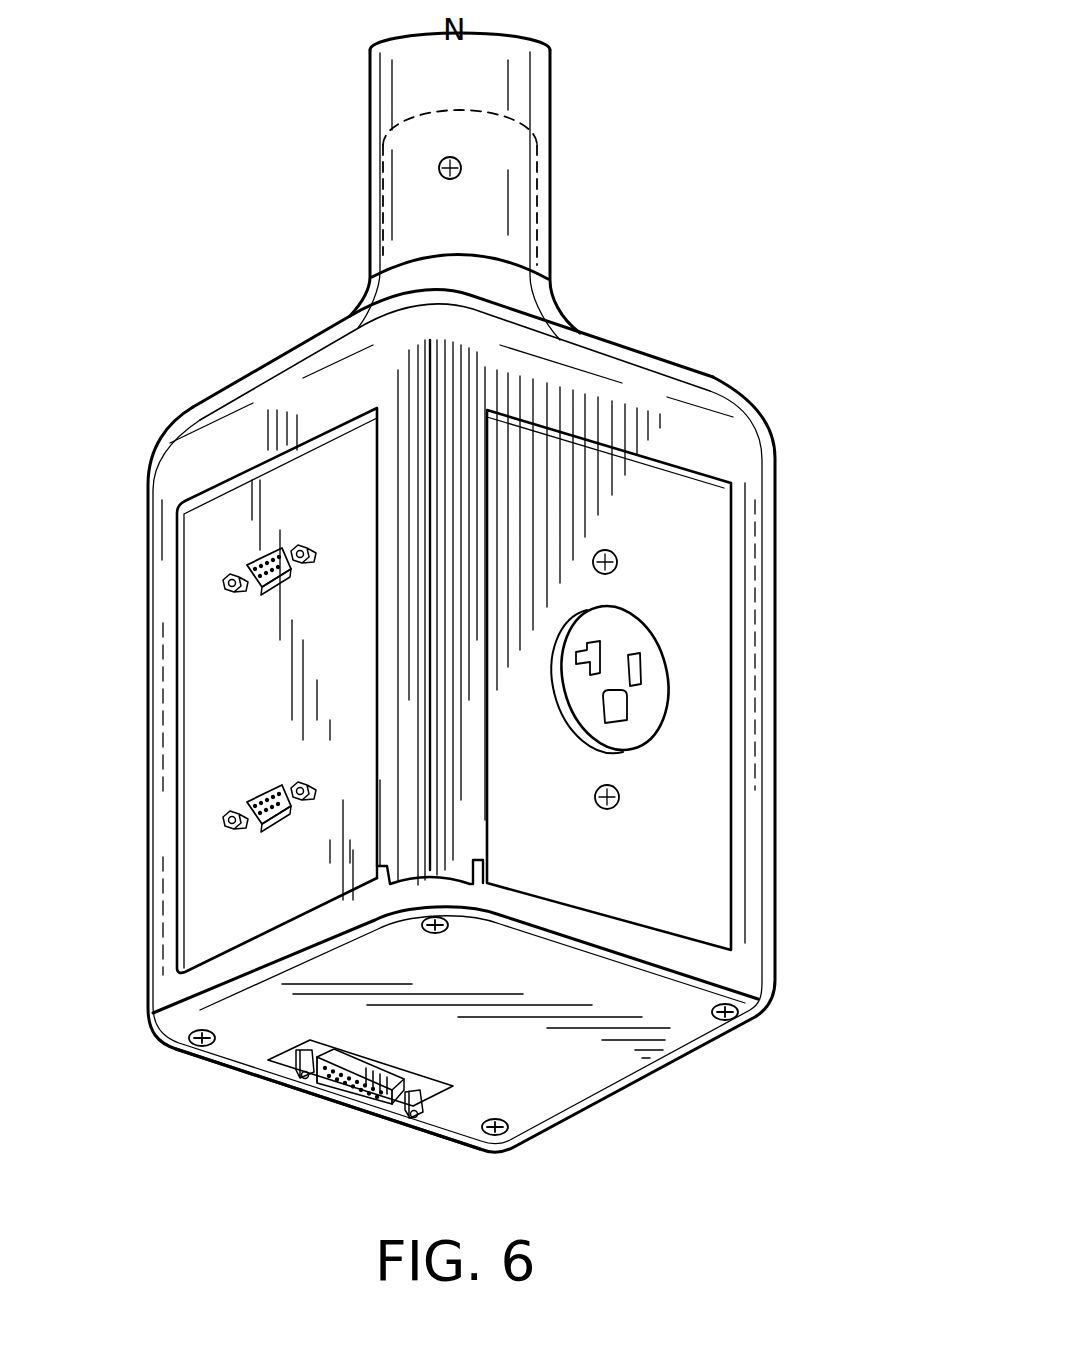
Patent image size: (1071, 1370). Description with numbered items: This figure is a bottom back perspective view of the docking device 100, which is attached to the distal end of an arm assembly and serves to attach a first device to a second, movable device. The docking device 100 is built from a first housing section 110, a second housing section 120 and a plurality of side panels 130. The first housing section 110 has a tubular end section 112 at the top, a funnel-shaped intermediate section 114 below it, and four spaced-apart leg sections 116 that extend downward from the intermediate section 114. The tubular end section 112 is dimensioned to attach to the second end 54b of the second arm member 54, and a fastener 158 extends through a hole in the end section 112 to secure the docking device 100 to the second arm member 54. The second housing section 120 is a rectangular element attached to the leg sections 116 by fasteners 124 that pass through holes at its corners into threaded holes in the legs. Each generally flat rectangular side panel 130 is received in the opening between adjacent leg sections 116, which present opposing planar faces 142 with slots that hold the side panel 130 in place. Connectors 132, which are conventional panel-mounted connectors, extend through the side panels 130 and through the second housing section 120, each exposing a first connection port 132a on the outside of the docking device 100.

The second arm member 54 is at (556, 86).
The second end 54b is at (370, 115).
The fastener 158 is at (439, 172).
The tubular end section 112 is at (540, 193).
The intermediate section 114 is at (614, 342).
The docking device 100 is at (812, 349).
The first housing section 110 is at (774, 443).
The leg section 116 is at (148, 698).
The second housing section 120 is at (615, 1082).
The fastener 124 is at (448, 932).
The side panel 130 is at (203, 807).
The planar face 142 is at (183, 615).
The connector 132 is at (288, 542).
The first connection port 132a is at (261, 592).